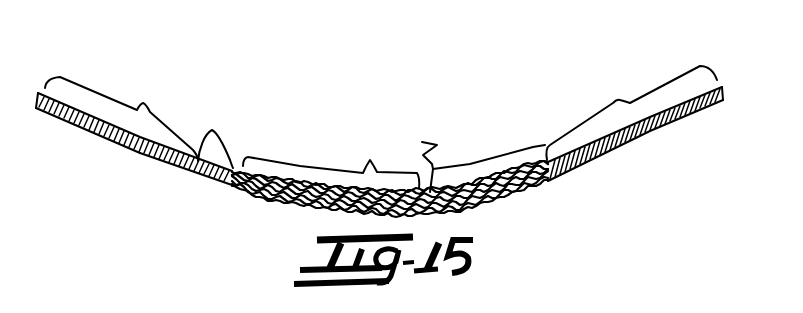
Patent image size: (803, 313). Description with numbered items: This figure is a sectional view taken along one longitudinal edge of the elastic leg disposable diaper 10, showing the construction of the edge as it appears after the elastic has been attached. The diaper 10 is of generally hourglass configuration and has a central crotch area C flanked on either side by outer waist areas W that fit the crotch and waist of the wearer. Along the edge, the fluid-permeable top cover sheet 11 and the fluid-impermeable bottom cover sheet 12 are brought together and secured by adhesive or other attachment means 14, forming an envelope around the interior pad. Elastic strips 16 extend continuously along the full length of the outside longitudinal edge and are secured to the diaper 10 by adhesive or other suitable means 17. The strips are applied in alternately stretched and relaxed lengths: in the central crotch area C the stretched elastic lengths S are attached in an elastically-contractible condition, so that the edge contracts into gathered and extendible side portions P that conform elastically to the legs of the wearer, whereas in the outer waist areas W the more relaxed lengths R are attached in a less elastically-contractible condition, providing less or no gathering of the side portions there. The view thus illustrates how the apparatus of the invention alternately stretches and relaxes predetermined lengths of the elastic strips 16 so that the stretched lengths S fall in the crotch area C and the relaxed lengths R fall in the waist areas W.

The elastic leg disposable diaper 10 is at (460, 122).
The top cover sheet 11 is at (217, 124).
The bottom cover sheet 12 is at (147, 157).
The attachment means 14 is at (668, 112).
The elastic strips 16 is at (173, 160).
The adhesive or other suitable means 17 is at (343, 188).
The relaxed lengths R is at (381, 113).
The stretched elastic lengths S is at (331, 158).
The gathered and extendible side portions P is at (421, 158).
The central crotch area C is at (374, 213).
The outer waist areas W is at (143, 173).